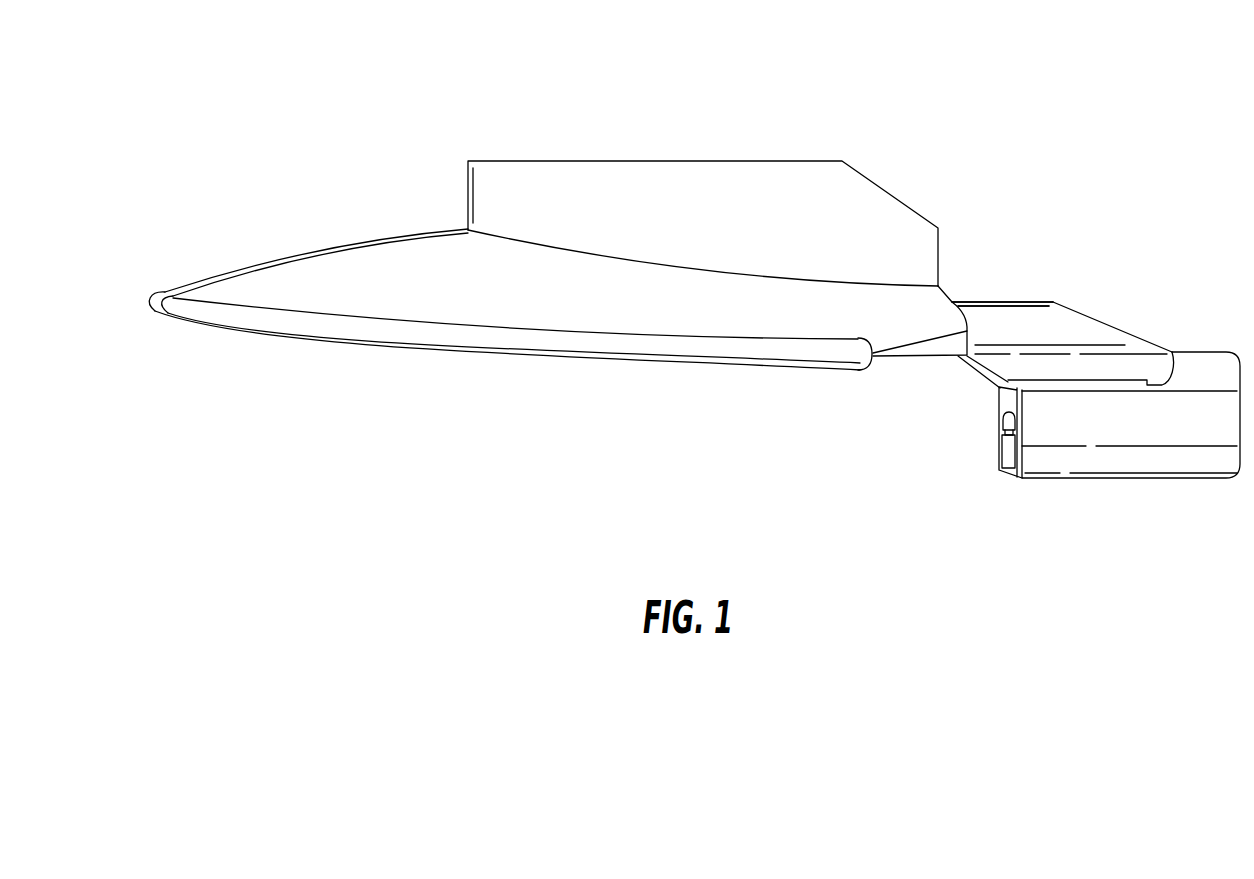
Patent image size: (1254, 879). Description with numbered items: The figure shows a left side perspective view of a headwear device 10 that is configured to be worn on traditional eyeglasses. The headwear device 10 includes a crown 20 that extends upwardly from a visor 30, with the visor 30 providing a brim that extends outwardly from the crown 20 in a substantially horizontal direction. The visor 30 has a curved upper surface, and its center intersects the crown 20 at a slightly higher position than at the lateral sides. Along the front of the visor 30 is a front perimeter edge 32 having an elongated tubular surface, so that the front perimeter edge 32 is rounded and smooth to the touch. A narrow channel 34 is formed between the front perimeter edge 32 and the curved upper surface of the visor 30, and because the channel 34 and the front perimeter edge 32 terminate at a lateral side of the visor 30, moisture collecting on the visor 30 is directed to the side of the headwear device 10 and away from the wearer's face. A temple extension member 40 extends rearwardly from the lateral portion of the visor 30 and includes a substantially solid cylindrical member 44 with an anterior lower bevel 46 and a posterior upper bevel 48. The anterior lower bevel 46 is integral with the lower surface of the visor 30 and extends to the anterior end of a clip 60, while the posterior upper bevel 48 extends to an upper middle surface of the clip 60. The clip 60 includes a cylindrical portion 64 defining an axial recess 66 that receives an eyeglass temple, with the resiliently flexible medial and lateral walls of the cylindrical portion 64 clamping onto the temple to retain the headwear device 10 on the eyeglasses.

The headwear device 10 is at (977, 86).
The crown 20 is at (466, 190).
The visor 30 is at (295, 274).
The front perimeter edge 32 is at (167, 309).
The channel 34 is at (181, 286).
The temple extension member 40 is at (1040, 330).
The cylindrical member 44 is at (1002, 323).
The anterior lower bevel 46 is at (981, 367).
The posterior upper bevel 48 is at (1120, 333).
The clip 60 is at (1167, 427).
The cylindrical portion 64 is at (1077, 430).
The axial recess 66 is at (1006, 448).